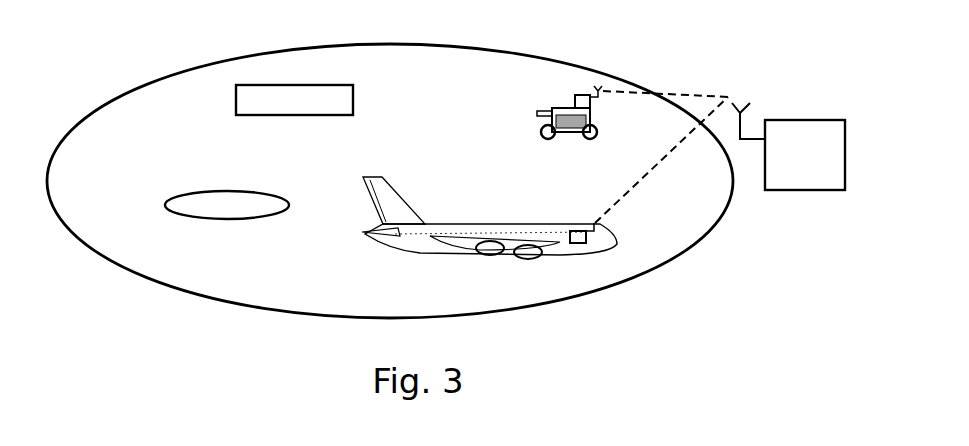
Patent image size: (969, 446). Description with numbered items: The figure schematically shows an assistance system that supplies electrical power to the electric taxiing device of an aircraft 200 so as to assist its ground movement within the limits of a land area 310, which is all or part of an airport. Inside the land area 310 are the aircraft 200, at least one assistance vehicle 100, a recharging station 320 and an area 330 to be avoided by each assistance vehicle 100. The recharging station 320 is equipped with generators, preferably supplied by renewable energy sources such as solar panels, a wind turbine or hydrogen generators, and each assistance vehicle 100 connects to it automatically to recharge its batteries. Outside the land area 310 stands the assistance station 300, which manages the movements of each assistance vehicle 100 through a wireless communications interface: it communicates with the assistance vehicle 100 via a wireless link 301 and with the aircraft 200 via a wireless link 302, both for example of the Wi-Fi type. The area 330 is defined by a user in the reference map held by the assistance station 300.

The assistance vehicle 100 is at (565, 107).
The aircraft 200 is at (484, 264).
The assistance station 300 is at (820, 192).
The wireless link 301 is at (680, 95).
The wireless link 302 is at (662, 170).
The land area 310 is at (155, 278).
The recharging station 320 is at (355, 100).
The area to be avoided 330 is at (235, 222).